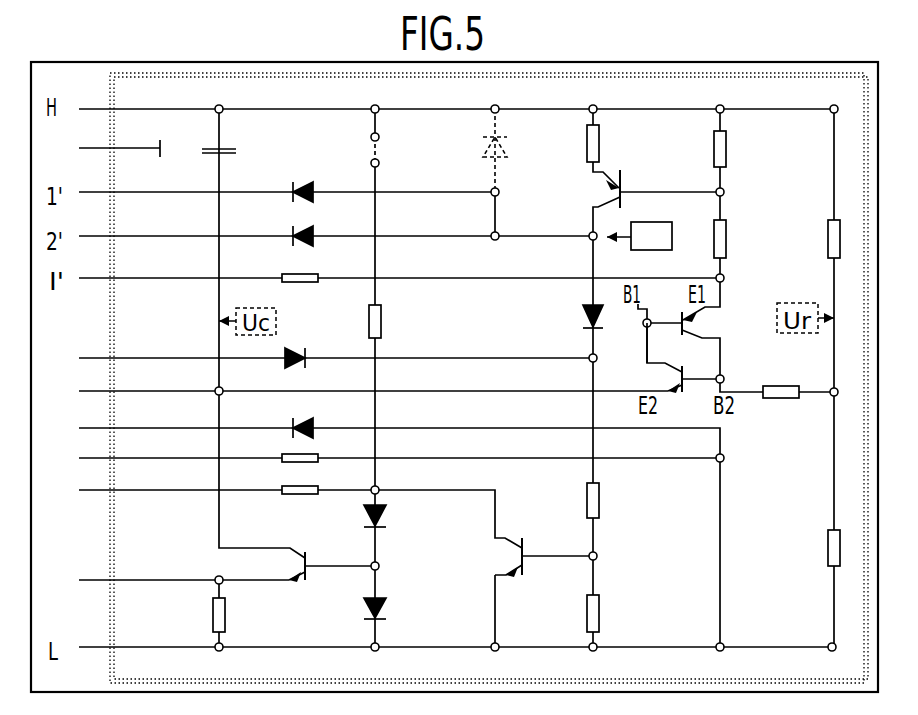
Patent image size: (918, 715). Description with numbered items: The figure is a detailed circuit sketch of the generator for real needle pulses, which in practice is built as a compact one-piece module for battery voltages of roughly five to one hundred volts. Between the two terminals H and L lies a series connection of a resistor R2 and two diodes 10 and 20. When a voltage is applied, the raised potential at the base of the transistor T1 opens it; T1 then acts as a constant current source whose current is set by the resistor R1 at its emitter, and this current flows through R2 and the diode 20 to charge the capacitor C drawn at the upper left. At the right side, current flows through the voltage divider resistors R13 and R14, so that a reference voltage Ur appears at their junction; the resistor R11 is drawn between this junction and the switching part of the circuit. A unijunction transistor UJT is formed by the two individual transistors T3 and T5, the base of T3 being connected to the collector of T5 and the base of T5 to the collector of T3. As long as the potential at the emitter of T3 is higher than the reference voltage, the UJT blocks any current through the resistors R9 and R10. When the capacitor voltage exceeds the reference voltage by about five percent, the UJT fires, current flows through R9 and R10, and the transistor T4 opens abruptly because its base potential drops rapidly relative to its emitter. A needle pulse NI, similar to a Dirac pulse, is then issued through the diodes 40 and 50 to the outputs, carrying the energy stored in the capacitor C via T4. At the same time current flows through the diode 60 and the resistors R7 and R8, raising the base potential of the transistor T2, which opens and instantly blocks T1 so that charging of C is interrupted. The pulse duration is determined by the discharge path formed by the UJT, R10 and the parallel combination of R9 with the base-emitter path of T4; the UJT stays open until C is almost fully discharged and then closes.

The diode 10 is at (382, 533).
The diode 20 is at (383, 600).
The diode 40 is at (315, 182).
The diode 50 is at (315, 226).
The diode 60 is at (581, 333).
The capacitor C is at (221, 135).
The resistor R1 is at (231, 615).
The resistor R2 is at (386, 333).
The resistor R7 is at (604, 508).
The resistor R8 is at (604, 605).
The resistor R9 is at (733, 161).
The resistor R10 is at (737, 248).
The resistor R11 is at (781, 377).
The voltage divider resistor R13 is at (817, 248).
The voltage divider resistor R14 is at (814, 552).
The transistor T1 is at (284, 564).
The transistor T2 is at (499, 557).
The transistor T3 is at (653, 378).
The transistor T4 is at (595, 189).
The transistor T5 is at (705, 324).
The unijunction transistor UJT is at (670, 344).
The needle pulse NI is at (651, 237).